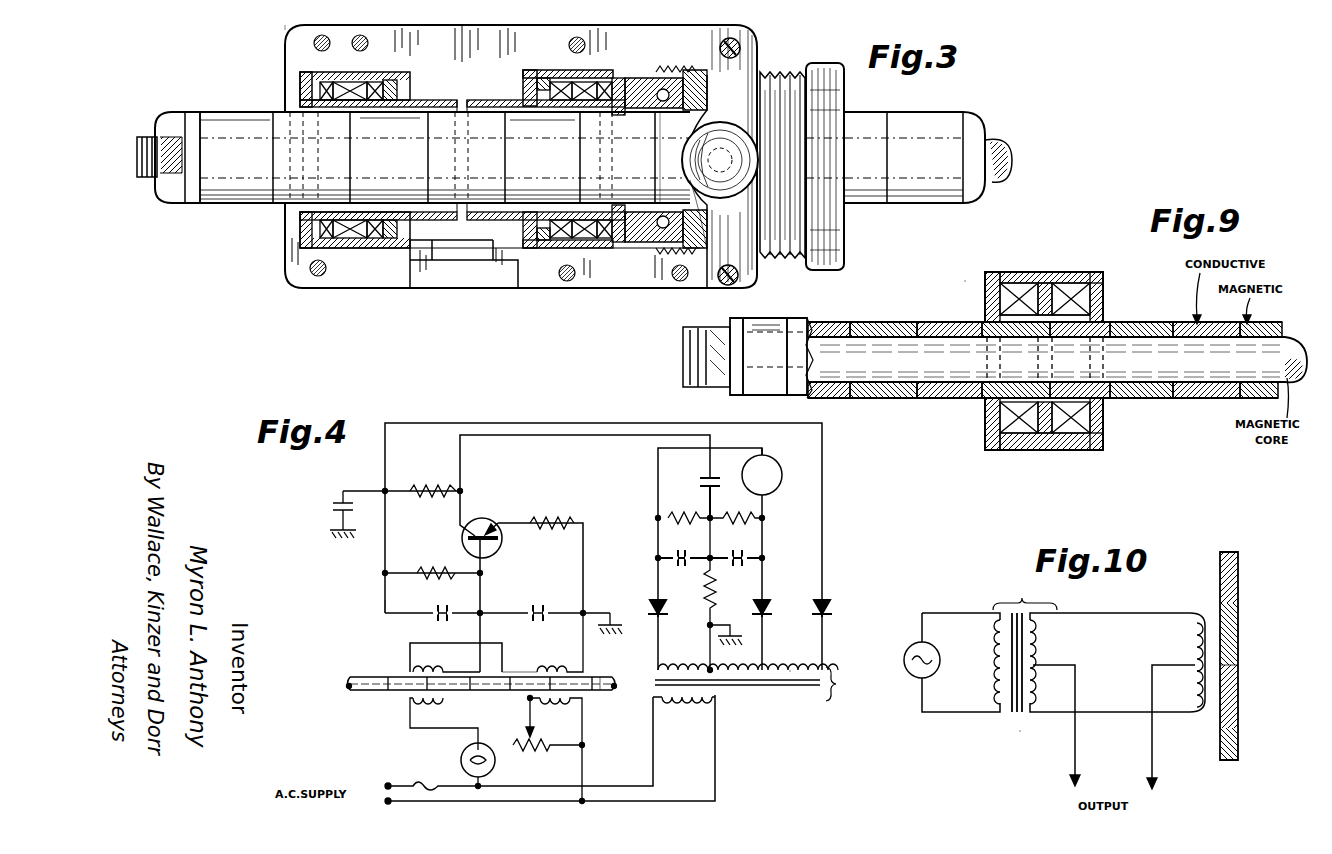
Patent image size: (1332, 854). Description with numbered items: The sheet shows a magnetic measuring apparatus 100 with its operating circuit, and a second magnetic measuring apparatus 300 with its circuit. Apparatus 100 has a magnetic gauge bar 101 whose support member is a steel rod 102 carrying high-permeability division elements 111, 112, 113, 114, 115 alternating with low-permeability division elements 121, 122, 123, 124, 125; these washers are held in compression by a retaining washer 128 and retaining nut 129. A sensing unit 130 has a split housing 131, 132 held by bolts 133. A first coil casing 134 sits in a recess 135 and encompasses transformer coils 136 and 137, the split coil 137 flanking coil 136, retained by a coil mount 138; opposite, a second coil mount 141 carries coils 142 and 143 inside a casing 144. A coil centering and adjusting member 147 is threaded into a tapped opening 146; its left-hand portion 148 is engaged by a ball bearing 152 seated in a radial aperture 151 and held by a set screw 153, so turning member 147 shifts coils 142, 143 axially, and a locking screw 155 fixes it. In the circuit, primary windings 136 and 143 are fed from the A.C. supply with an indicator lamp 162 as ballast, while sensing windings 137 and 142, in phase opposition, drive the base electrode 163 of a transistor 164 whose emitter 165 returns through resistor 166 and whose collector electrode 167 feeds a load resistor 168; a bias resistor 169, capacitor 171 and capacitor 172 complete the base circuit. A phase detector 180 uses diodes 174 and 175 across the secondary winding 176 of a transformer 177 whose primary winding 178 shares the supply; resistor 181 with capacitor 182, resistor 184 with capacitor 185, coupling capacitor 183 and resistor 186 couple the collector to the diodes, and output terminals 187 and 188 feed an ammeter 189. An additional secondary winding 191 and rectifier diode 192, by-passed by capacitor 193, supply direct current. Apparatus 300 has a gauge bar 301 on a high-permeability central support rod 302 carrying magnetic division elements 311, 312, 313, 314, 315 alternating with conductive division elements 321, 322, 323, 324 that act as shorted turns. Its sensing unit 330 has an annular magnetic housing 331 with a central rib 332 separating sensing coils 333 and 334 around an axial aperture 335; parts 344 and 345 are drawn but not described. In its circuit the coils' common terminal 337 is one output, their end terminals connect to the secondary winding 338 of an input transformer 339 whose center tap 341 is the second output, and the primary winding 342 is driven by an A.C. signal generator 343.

In FIG. 3, the measuring apparatus 100 is at (272, 228).
In FIG. 4, the measuring apparatus 100 is at (372, 606).
In FIG. 3, the magnetic gauge bar 101 is at (248, 208).
In FIG. 4, the magnetic gauge bar 101 is at (348, 690).
In FIG. 3, the steel rod 102 is at (145, 180).
In FIG. 3, the division element 111 is at (247, 157).
In FIG. 4, the division element 111 is at (360, 672).
In FIG. 3, the division element 112 is at (400, 157).
In FIG. 4, the division element 112 is at (445, 677).
In FIG. 3, the division element 113 is at (551, 157).
In FIG. 4, the division element 113 is at (516, 677).
In FIG. 3, the division element 114 is at (673, 123).
In FIG. 4, the division element 114 is at (605, 677).
In FIG. 3, the division element 115 is at (865, 157).
In FIG. 3, the division element 121 is at (320, 157).
In FIG. 4, the division element 121 is at (395, 677).
In FIG. 3, the division element 122 is at (474, 157).
In FIG. 4, the division element 122 is at (483, 690).
In FIG. 3, the division element 123 is at (626, 157).
In FIG. 4, the division element 123 is at (585, 692).
In FIG. 3, the division element 124 is at (830, 128).
In FIG. 3, the division element 125 is at (931, 157).
In FIG. 3, the retaining washer 128 is at (192, 195).
In FIG. 3, the retaining nut 129 is at (168, 114).
In FIG. 3, the sensing unit 130 is at (439, 276).
In FIG. 3, the housing section 131 is at (640, 283).
In FIG. 3, the housing section 132 is at (707, 283).
In FIG. 3, the bolts 133 is at (314, 43).
In FIG. 3, the first coil casing 134 is at (300, 90).
In FIG. 3, the recess 135 is at (300, 75).
In FIG. 3, the transformer coil 136 is at (350, 82).
In FIG. 4, the transformer coil 136 is at (418, 703).
In FIG. 3, the transformer coil 137 is at (326, 82).
In FIG. 4, the transformer coil 137 is at (427, 645).
In FIG. 3, the coil mount 138 is at (428, 100).
In FIG. 3, the second coil mount 141 is at (480, 100).
In FIG. 3, the transformer coil 142 is at (580, 82).
In FIG. 4, the transformer coil 142 is at (548, 667).
In FIG. 3, the transformer coil 143 is at (552, 82).
In FIG. 4, the transformer coil 143 is at (543, 703).
In FIG. 3, the coil casing 144 is at (583, 72).
In FIG. 3, the threaded tapped opening 146 is at (727, 75).
In FIG. 3, the coil centering and adjusting member 147 is at (800, 97).
In FIG. 3, the left-hand portion of coil centering member 148 is at (648, 78).
In FIG. 3, the radial tapped aperture 151 is at (670, 90).
In FIG. 3, the ball bearing 152 is at (708, 102).
In FIG. 3, the set screw 153 is at (672, 65).
In FIG. 3, the locking screw 155 is at (718, 195).
In FIG. 4, the indicator lamp 162 is at (462, 757).
In FIG. 4, the base electrode 163 is at (483, 519).
In FIG. 4, the transistor 164 is at (481, 520).
In FIG. 4, the emitter 165 is at (496, 515).
In FIG. 4, the resistor 166 is at (552, 518).
In FIG. 4, the collector electrode 167 is at (466, 536).
In FIG. 4, the load resistor 168 is at (425, 487).
In FIG. 4, the bias resistor 169 is at (430, 568).
In FIG. 4, the capacitor 171 is at (436, 606).
In FIG. 4, the capacitor 172 is at (545, 606).
In FIG. 4, the diode 174 is at (655, 600).
In FIG. 4, the diode 175 is at (768, 602).
In FIG. 4, the secondary winding 176 is at (743, 686).
In FIG. 4, the transformer 177 is at (761, 689).
In FIG. 4, the primary winding 178 is at (672, 703).
In FIG. 4, the phase detector 180 is at (715, 556).
In FIG. 4, the resistor 181 is at (682, 514).
In FIG. 4, the capacitor 182 is at (682, 568).
In FIG. 4, the coupling capacitor 183 is at (708, 476).
In FIG. 4, the resistor 184 is at (745, 516).
In FIG. 4, the capacitor 185 is at (744, 552).
In FIG. 4, the resistor 186 is at (712, 600).
In FIG. 4, the output terminal 187 is at (656, 515).
In FIG. 4, the output terminal 188 is at (766, 520).
In FIG. 4, the ammeter 189 is at (775, 470).
In FIG. 4, the secondary winding 191 is at (793, 665).
In FIG. 4, the rectifier diode 192 is at (828, 603).
In FIG. 4, the capacitor 193 is at (340, 506).
In FIG. 9, the measuring apparatus 300 is at (965, 278).
In FIG. 10, the measuring apparatus 300 is at (1010, 728).
In FIG. 9, the magnetic gauge bar 301 is at (703, 383).
In FIG. 9, the central support rod 302 is at (683, 350).
In FIG. 9, the division element 311 is at (760, 325).
In FIG. 9, the division element 312 is at (898, 322).
In FIG. 9, the division element 313 is at (995, 325).
In FIG. 10, the division element 313 is at (1240, 605).
In FIG. 9, the division element 314 is at (1163, 400).
In FIG. 9, the division element 315 is at (1258, 325).
In FIG. 9, the division element 321 is at (840, 398).
In FIG. 9, the division element 322 is at (930, 398).
In FIG. 9, the division element 323 is at (1098, 398).
In FIG. 10, the division element 323 is at (1240, 695).
In FIG. 9, the division element 324 is at (1195, 398).
In FIG. 9, the sensing unit 330 is at (1049, 337).
In FIG. 9, the annular housing 331 is at (1090, 272).
In FIG. 9, the central rib 332 is at (1050, 272).
In FIG. 9, the sensing coil 333 is at (1013, 283).
In FIG. 10, the sensing coil 333 is at (1190, 615).
In FIG. 9, the sensing coil 334 is at (1078, 300).
In FIG. 10, the sensing coil 334 is at (1190, 705).
In FIG. 9, the axial aperture 335 is at (1103, 318).
In FIG. 10, the common terminal 337 is at (1190, 663).
In FIG. 10, the secondary winding 338 is at (1040, 634).
In FIG. 10, the input transformer 339 is at (1022, 596).
In FIG. 10, the center tap 341 is at (1040, 665).
In FIG. 10, the primary winding 342 is at (993, 680).
In FIG. 10, the A.C. signal generator 343 is at (938, 642).
In FIG. 9, the coil housing 344 is at (985, 292).
In FIG. 9, the coil separator 345 is at (1090, 290).